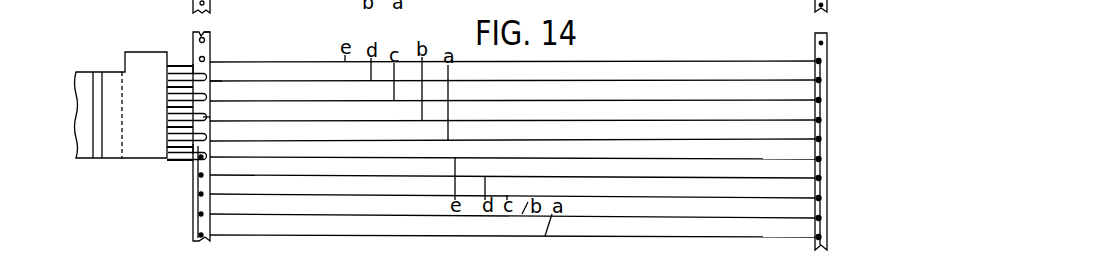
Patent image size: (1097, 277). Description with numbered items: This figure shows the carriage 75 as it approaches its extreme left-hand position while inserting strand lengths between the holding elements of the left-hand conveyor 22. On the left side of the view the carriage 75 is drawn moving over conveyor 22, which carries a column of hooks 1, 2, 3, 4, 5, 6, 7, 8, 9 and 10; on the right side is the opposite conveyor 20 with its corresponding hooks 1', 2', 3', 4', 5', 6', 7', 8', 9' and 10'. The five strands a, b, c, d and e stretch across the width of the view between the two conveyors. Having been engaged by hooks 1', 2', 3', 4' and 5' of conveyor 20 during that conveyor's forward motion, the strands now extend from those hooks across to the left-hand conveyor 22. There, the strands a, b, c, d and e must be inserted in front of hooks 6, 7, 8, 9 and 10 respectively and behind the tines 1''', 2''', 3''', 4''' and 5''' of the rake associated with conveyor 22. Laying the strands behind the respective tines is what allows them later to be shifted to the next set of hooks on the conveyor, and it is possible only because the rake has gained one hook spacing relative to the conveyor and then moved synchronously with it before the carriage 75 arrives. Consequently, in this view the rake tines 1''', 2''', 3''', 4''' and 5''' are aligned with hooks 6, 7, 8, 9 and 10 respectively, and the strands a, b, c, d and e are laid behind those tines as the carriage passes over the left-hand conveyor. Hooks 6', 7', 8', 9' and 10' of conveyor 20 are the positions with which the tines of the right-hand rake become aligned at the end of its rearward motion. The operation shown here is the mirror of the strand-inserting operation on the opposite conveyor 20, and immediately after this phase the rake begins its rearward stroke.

The carriage 75 is at (138, 53).
The hook 10 is at (186, 120).
The conveyor 20 is at (813, 48).
The conveyor 22 is at (210, 46).
The hook 9 is at (182, 60).
The hook 8 is at (242, 67).
The hook 7 is at (229, 114).
The hook 6 is at (183, 166).
The hook 5 is at (222, 166).
The hook 4 is at (189, 193).
The hook 3 is at (222, 204).
The hook 2 is at (180, 220).
The hook 1 is at (190, 236).
The tine 5''' is at (169, 50).
The tine 4''' is at (168, 80).
The tine 3''' is at (168, 104).
The tine 2''' is at (163, 164).
The tine 1''' is at (176, 182).
The hook 10' is at (545, 50).
The hook 9' is at (535, 76).
The hook 8' is at (544, 96).
The hook 7' is at (534, 118).
The hook 6' is at (541, 140).
The hook 5' is at (534, 163).
The hook 4' is at (543, 187).
The hook 3' is at (534, 206).
The hook 2' is at (544, 218).
The hook 1' is at (538, 241).